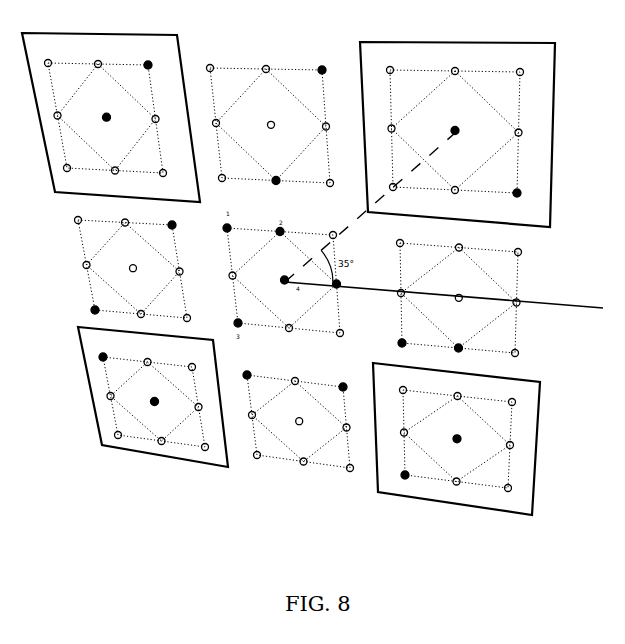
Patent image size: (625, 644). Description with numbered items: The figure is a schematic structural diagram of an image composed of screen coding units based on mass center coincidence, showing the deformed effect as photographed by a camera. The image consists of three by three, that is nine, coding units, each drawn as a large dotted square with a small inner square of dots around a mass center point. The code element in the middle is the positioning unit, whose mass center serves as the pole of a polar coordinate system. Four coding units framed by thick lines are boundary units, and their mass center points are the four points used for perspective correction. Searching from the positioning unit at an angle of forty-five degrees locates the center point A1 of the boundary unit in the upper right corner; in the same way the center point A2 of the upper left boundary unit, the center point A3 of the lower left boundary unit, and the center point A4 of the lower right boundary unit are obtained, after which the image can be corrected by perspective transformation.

The center point of upper right boundary unit A1 is at (457, 134).
The center point of upper left boundary unit A2 is at (111, 117).
The center point of lower left boundary unit A3 is at (153, 397).
The center point of lower right boundary unit A4 is at (456, 439).